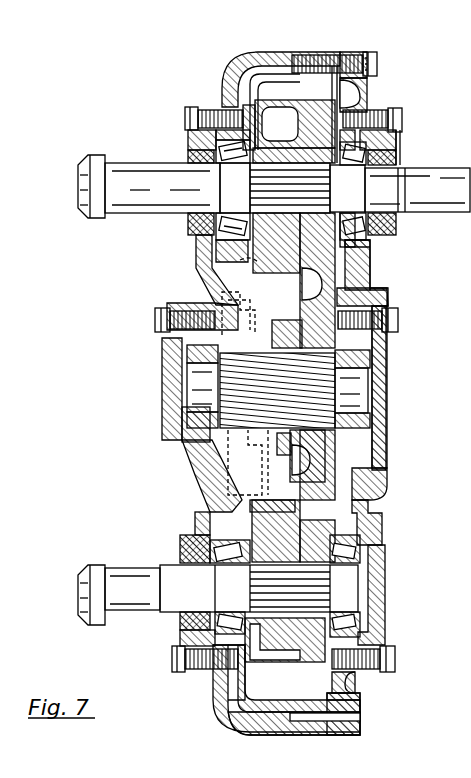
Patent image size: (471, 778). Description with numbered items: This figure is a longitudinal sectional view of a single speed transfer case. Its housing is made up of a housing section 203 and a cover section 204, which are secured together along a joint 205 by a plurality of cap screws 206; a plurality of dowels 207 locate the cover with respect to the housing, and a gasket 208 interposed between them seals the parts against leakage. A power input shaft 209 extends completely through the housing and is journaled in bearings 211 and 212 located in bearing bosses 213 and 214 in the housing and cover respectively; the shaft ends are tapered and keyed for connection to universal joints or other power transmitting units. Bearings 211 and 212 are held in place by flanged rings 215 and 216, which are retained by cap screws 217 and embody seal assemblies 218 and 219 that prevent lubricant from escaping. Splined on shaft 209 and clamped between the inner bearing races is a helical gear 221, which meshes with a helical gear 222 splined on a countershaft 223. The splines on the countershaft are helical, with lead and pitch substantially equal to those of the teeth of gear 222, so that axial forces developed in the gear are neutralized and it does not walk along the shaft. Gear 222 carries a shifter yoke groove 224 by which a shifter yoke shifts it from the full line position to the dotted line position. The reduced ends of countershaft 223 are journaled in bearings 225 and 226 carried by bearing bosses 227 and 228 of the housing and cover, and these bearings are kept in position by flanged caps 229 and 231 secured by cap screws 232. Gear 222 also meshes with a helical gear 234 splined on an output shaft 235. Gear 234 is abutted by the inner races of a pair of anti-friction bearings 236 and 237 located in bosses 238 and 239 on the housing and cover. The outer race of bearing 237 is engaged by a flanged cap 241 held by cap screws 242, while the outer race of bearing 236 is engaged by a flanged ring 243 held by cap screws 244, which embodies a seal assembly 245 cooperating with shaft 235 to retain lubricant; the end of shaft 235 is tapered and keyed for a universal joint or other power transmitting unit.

The housing section 203 is at (186, 486).
The cover section 204 is at (368, 484).
The joint 205 is at (326, 690).
The cap screws 206 is at (378, 64).
The dowels 207 is at (360, 714).
The gasket 208 is at (325, 735).
The power input shaft 209 is at (406, 212).
The bearing 211 is at (221, 186).
The bearing 212 is at (288, 148).
The bearing boss 213 is at (186, 140).
The bearing boss 214 is at (332, 135).
The flanged ring 215 is at (196, 246).
The flanged ring 216 is at (396, 146).
The cap screws 217 is at (186, 112).
The seal assembly 218 is at (194, 225).
The seal assembly 219 is at (402, 160).
The helical gear 221 is at (308, 112).
The helical gear 222 is at (300, 280).
The countershaft 223 is at (273, 471).
The shifter yoke groove 224 is at (272, 338).
The bearing 225 is at (170, 442).
The bearing 226 is at (388, 356).
The bearing boss 227 is at (200, 303).
The bearing boss 228 is at (368, 300).
The flanged cap 229 is at (163, 392).
The flanged cap 231 is at (386, 398).
The cap screws 232 is at (400, 322).
The helical gear 234 is at (282, 656).
The output shaft 235 is at (200, 586).
The anti-friction bearing 236 is at (192, 545).
The anti-friction bearing 237 is at (322, 552).
The boss 238 is at (185, 646).
The boss 239 is at (364, 508).
The flanged cap 241 is at (386, 582).
The cap screws 242 is at (397, 660).
The flanged ring 243 is at (194, 526).
The cap screws 244 is at (180, 670).
The seal assembly 245 is at (186, 623).